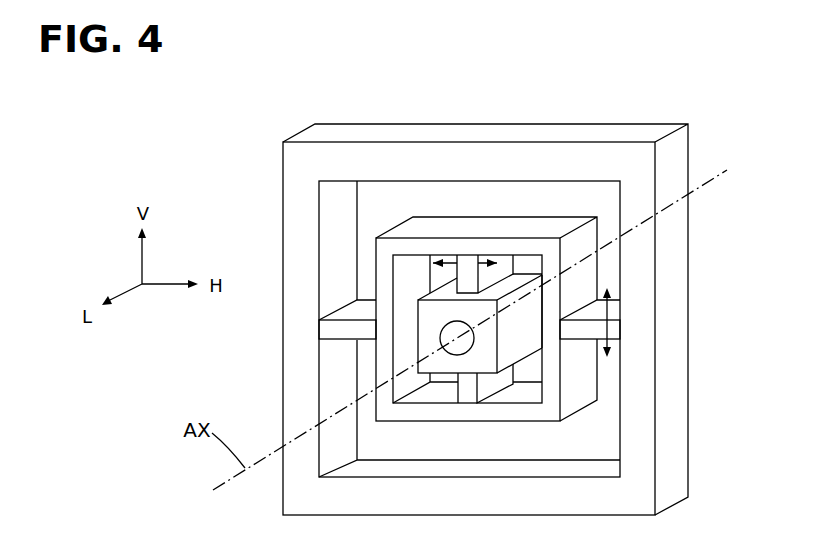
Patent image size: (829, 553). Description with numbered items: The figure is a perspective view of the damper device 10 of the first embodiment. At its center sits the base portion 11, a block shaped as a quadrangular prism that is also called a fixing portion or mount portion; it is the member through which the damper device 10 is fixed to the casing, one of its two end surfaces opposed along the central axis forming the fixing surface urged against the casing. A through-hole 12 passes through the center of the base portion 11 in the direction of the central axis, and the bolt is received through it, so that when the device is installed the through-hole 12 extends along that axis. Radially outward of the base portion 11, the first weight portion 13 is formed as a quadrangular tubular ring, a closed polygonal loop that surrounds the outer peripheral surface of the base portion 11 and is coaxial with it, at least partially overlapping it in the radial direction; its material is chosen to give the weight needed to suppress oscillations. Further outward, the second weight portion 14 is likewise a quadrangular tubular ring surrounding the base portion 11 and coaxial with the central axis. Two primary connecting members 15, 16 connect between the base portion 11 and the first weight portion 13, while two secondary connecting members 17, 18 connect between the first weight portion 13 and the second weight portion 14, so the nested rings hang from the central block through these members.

The damper device 10 is at (697, 96).
The base portion 11 is at (445, 331).
The through-hole 12 is at (430, 306).
The first weight portion 13 is at (415, 247).
The second weight portion 14 is at (455, 160).
The primary connecting member 15 is at (600, 260).
The primary connecting member 16 is at (467, 392).
The secondary connecting member 17 is at (612, 327).
The secondary connecting member 18 is at (347, 331).